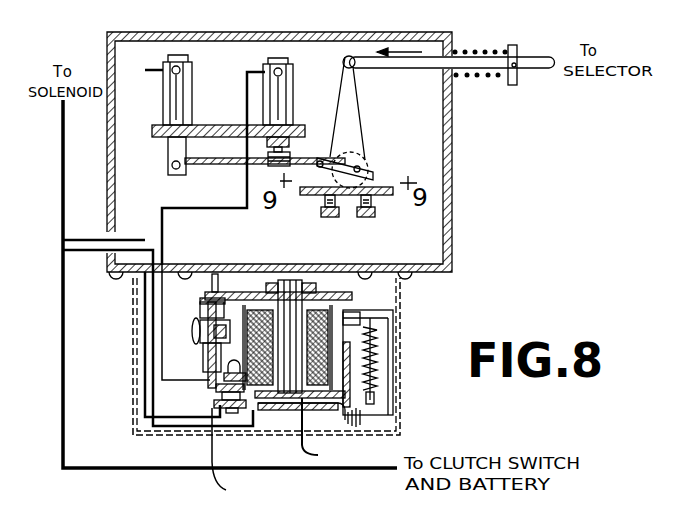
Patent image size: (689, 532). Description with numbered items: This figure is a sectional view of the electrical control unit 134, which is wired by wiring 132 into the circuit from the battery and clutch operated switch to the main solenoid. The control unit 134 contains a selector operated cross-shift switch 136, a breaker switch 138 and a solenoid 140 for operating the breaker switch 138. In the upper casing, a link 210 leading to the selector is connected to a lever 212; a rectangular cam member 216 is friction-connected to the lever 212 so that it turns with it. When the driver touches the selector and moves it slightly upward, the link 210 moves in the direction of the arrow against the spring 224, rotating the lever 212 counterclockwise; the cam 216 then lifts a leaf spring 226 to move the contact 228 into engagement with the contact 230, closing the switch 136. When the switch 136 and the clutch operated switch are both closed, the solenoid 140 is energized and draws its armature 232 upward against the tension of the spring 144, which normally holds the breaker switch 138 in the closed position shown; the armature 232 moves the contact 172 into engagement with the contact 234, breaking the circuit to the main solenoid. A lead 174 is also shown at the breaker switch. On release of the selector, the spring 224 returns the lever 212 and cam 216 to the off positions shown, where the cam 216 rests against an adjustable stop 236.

The wiring 132 is at (102, 468).
The control unit 134 is at (537, 184).
The cross-shift switch 136 is at (215, 110).
The breaker switch 138 is at (207, 396).
The solenoid 140 is at (288, 393).
The spring 144 is at (375, 352).
The contact 172 is at (261, 411).
The lead wire 174 is at (237, 456).
The link 210 is at (547, 67).
The lever 212 is at (353, 100).
The cam member 216 is at (370, 180).
The spring 224 is at (487, 52).
The leaf spring 226 is at (231, 164).
The contact 228 is at (268, 172).
The contact 230 is at (296, 118).
The armature 232 is at (334, 433).
The contact 234 is at (217, 386).
The adjustable stop 236 is at (372, 218).